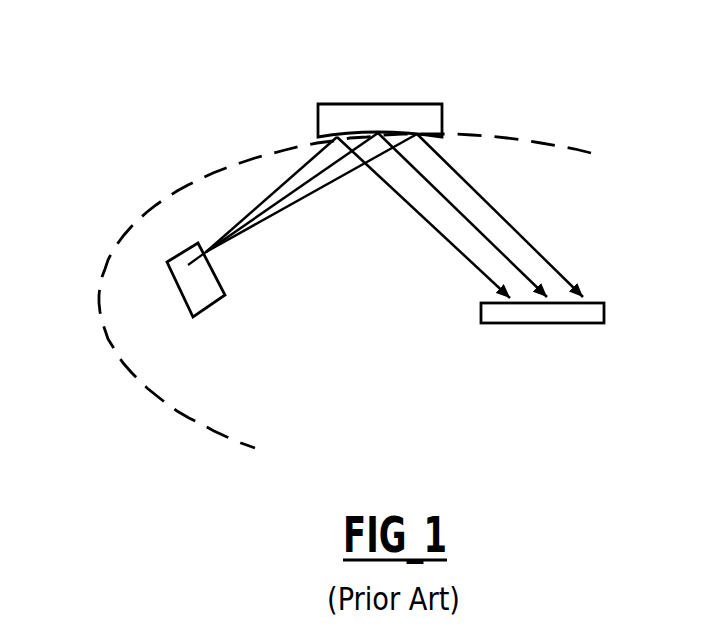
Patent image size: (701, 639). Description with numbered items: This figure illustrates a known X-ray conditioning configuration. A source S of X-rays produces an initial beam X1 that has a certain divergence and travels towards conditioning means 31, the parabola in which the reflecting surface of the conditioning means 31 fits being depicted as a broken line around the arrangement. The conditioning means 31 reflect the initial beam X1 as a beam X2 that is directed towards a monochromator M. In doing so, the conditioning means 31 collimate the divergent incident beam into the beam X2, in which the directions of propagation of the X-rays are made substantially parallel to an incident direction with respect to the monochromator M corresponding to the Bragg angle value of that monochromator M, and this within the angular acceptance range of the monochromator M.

The conditioning means 31 is at (423, 97).
The source of X-rays S is at (181, 306).
The monochromator M is at (589, 312).
The initial beam X1 is at (244, 220).
The beam X2 is at (423, 220).